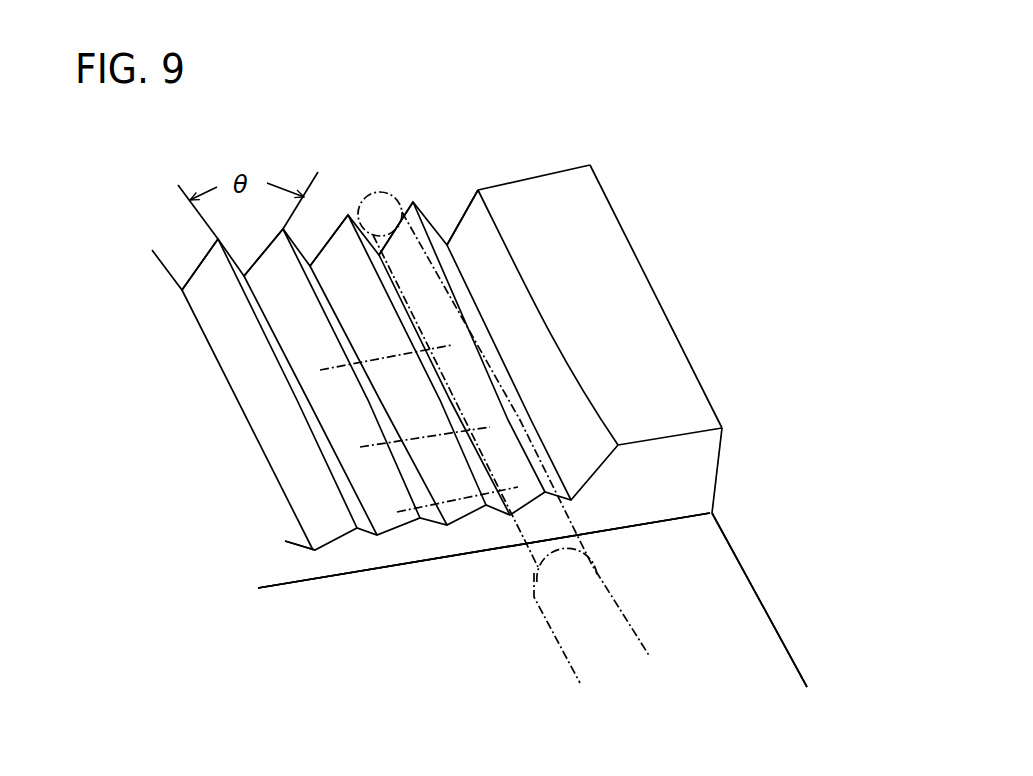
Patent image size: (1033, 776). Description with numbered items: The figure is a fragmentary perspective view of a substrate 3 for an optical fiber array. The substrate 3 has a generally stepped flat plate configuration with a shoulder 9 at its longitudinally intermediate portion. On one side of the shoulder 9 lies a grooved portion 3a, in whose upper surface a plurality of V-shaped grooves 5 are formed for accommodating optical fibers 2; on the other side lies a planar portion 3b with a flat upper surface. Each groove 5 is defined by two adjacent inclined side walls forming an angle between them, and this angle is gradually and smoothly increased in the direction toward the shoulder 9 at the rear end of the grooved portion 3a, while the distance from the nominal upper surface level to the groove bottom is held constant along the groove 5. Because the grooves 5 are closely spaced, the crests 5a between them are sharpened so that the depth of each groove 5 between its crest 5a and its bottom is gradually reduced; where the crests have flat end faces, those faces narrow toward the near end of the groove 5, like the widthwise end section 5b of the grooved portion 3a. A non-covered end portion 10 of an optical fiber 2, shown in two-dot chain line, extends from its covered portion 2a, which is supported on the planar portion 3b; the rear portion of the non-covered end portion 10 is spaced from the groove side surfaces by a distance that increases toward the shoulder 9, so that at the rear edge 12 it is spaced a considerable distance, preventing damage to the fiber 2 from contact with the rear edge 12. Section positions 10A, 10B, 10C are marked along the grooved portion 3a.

The optical fiber 2 is at (628, 637).
The covered portion 2a is at (567, 615).
The substrate 3 is at (828, 385).
The grooved portion 3a is at (638, 335).
The planar portion 3b is at (733, 632).
The groove 5 is at (213, 282).
The crest 5a is at (332, 320).
The widthwise end section 5b is at (630, 398).
The shoulder 9 is at (370, 560).
The non-covered end portion 10 is at (383, 208).
The section line A 10A is at (329, 373).
The section line B 10B is at (371, 449).
The section line C 10C is at (404, 514).
The rear edge 12 is at (337, 543).